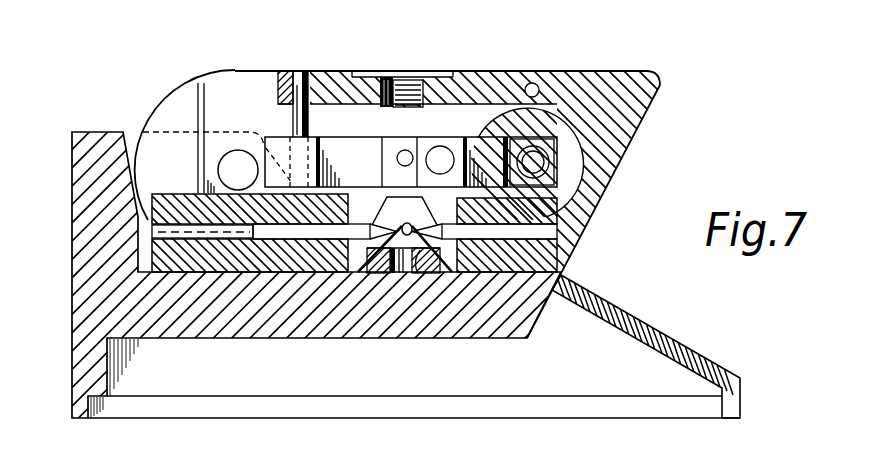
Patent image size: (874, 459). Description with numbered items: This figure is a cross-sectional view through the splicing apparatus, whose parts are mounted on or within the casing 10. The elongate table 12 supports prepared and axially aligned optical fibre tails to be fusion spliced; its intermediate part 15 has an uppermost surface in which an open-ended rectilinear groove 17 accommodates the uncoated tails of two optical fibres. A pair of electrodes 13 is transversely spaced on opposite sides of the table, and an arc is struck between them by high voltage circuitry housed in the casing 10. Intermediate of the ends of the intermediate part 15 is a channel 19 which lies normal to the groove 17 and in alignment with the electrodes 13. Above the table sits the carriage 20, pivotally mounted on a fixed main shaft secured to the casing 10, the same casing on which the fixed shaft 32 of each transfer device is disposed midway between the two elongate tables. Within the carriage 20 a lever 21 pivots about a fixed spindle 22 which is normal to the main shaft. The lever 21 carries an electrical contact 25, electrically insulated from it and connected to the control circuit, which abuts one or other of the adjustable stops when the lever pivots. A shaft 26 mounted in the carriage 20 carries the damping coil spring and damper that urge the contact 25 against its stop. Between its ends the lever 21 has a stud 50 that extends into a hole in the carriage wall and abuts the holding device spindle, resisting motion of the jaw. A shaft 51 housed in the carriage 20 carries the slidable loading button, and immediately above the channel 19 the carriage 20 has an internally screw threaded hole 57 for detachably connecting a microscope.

The casing 10 is at (80, 359).
The elongate table 12 is at (440, 266).
The electrodes 13 is at (557, 233).
The intermediate part 15 is at (373, 250).
The rectilinear groove 17 is at (405, 236).
The channel 19 is at (419, 246).
The carriage 20 is at (606, 66).
The lever 21 is at (355, 160).
The spindle 22 is at (292, 112).
The electrical contact 25 is at (441, 157).
The shaft 26 is at (536, 163).
The fixed shaft 32 is at (228, 168).
The stud 50 is at (405, 150).
The shaft 51 is at (532, 83).
The internally screw threaded hole 57 is at (398, 78).